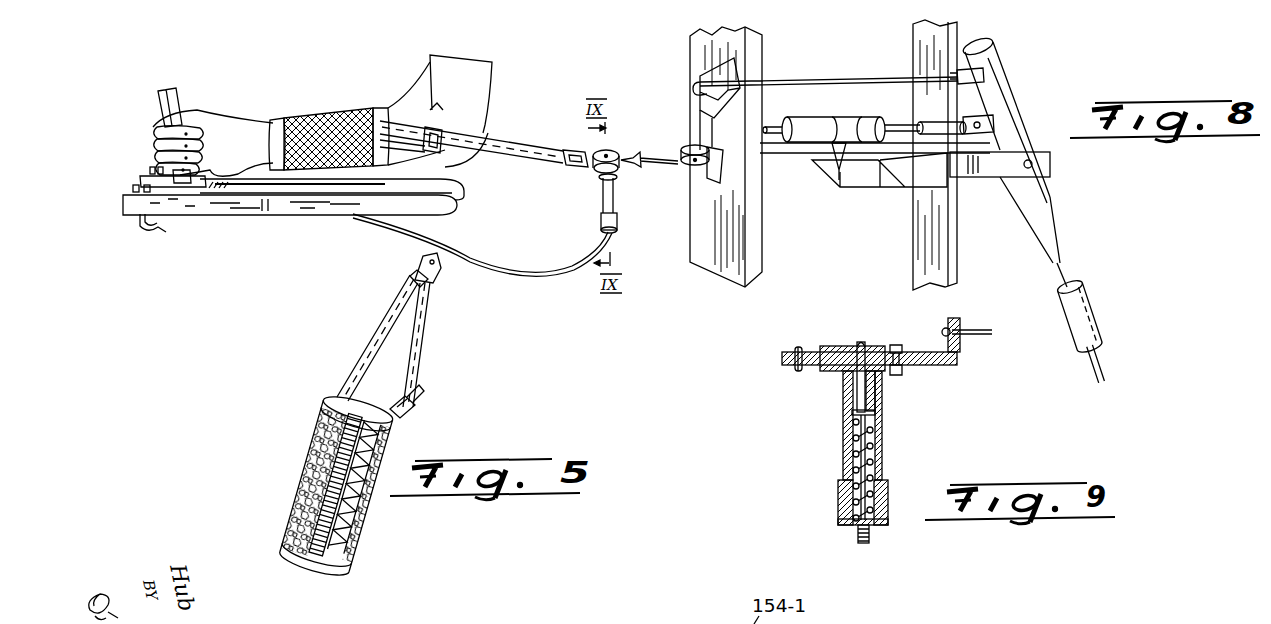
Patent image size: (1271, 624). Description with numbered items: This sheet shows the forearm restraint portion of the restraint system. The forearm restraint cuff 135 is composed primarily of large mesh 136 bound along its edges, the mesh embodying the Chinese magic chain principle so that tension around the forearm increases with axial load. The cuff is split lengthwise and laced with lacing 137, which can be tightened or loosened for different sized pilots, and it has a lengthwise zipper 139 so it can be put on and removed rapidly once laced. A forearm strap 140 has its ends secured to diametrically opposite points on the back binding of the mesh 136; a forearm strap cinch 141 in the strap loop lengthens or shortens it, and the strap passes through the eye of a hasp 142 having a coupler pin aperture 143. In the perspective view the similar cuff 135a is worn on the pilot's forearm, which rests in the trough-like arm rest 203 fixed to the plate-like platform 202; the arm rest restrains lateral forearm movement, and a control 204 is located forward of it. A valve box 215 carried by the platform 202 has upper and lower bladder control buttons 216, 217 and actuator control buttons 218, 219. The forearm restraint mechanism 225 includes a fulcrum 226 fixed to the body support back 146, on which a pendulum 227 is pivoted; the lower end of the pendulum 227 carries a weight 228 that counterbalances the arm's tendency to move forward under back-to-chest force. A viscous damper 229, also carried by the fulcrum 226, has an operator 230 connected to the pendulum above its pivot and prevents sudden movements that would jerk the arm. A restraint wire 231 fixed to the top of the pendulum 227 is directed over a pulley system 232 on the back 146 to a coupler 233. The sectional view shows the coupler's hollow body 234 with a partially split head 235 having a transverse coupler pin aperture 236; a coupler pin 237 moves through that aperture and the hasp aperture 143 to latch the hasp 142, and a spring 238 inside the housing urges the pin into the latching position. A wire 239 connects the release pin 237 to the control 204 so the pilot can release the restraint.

In FIG. 5, the forearm restraint cuff 135 is at (320, 437).
In FIG. 8, the forearm restraint cuff 135a is at (359, 102).
In FIG. 5, the mesh 136 is at (300, 478).
In FIG. 5, the lacing 137 is at (366, 519).
In FIG. 5, the zipper 139 is at (356, 412).
In FIG. 8, the forearm strap 140 is at (517, 145).
In FIG. 5, the forearm strap 140 is at (422, 338).
In FIG. 8, the forearm strap cinch 141 is at (440, 128).
In FIG. 5, the forearm strap cinch 141 is at (411, 404).
In FIG. 8, the hasp 142 is at (588, 168).
In FIG. 5, the hasp 142 is at (439, 282).
In FIG. 9, the hasp 142 is at (802, 373).
In FIG. 5, the coupler pin aperture 143 is at (413, 277).
In FIG. 9, the coupler pin aperture 143 is at (858, 366).
In FIG. 8, the back 146 is at (723, 282).
In FIG. 8, the platform 202 is at (140, 230).
In FIG. 8, the arm rest 203 is at (307, 193).
In FIG. 8, the control 204 is at (157, 99).
In FIG. 8, the valve box 215 is at (118, 209).
In FIG. 8, the upper bladder control button 216 is at (145, 185).
In FIG. 8, the lower bladder control button 217 is at (134, 186).
In FIG. 8, the actuator control button 218 is at (150, 168).
In FIG. 8, the actuator control button 219 is at (155, 193).
In FIG. 8, the forearm restraint mechanism 225 is at (1024, 73).
In FIG. 8, the fulcrum 226 is at (990, 178).
In FIG. 8, the pendulum 227 is at (1010, 99).
In FIG. 8, the weight 228 is at (1098, 330).
In FIG. 8, the viscous damper 229 is at (806, 142).
In FIG. 8, the operator 230 is at (895, 122).
In FIG. 8, the restraint wire 231 is at (817, 80).
In FIG. 9, the restraint wire 231 is at (977, 337).
In FIG. 8, the pulley system 232 is at (713, 162).
In FIG. 8, the coupler 233 is at (620, 205).
In FIG. 9, the coupler 233 is at (884, 432).
In FIG. 9, the hollow body 234 is at (847, 467).
In FIG. 8, the split head 235 is at (621, 150).
In FIG. 9, the split head 235 is at (866, 348).
In FIG. 9, the coupler pin aperture 236 is at (852, 375).
In FIG. 9, the coupler pin 237 is at (867, 393).
In FIG. 9, the spring 238 is at (868, 461).
In FIG. 8, the wire 239 is at (533, 272).
In FIG. 9, the wire 239 is at (870, 541).